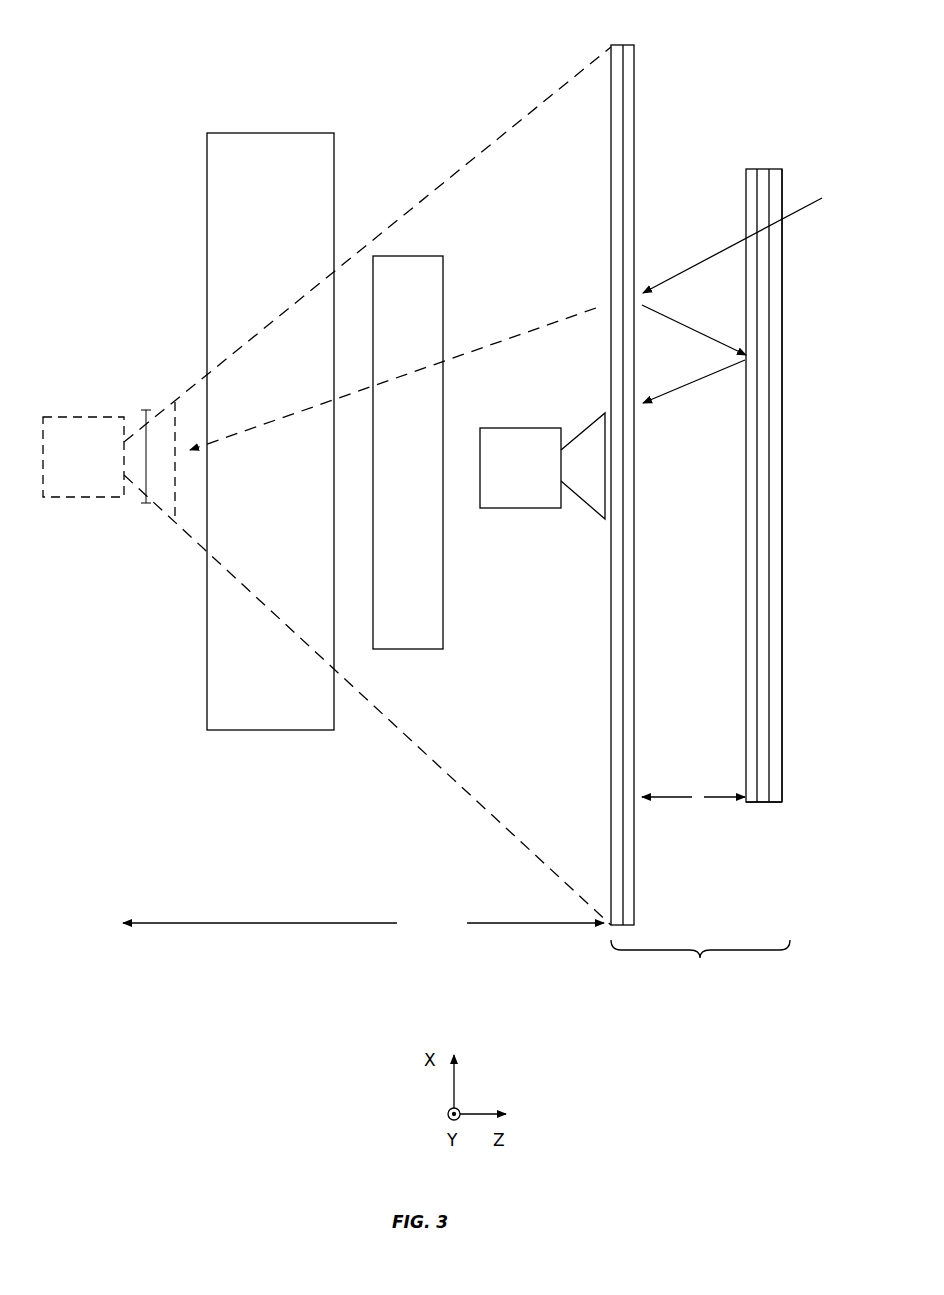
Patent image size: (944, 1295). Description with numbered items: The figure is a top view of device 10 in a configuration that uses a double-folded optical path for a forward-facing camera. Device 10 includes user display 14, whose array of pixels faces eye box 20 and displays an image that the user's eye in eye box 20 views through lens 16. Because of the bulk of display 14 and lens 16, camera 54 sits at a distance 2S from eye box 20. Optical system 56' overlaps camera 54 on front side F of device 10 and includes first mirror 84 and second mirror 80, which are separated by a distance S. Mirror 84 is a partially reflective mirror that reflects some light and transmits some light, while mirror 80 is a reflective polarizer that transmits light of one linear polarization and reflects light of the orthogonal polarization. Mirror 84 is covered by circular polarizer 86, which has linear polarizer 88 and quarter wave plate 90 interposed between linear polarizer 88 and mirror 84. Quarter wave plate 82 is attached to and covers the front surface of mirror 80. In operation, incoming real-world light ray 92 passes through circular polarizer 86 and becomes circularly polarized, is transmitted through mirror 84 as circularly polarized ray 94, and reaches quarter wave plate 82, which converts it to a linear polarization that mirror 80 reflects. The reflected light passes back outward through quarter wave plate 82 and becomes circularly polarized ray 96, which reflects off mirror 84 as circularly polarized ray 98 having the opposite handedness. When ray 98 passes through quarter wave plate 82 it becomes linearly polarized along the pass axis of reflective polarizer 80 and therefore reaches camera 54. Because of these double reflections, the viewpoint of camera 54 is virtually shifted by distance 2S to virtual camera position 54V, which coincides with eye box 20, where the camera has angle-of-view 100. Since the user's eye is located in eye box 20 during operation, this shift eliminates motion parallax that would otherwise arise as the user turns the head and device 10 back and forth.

The device 10 is at (243, 77).
The user display 14 is at (407, 649).
The lens 16 is at (270, 730).
The eye box 20 is at (148, 503).
The camera 54 is at (520, 508).
The virtual camera position 54V is at (84, 416).
The optical system 56' is at (700, 963).
The second mirror 80 is at (611, 83).
The quarter wave plate 82 is at (634, 68).
The first mirror 84 is at (746, 169).
The circular polarizer 86 is at (769, 166).
The linear polarizer 88 is at (782, 802).
The quarter wave plate 90 is at (763, 802).
The incoming light ray 92 is at (798, 213).
The circularly polarized ray 94 is at (705, 260).
The circularly polarized ray 96 is at (688, 330).
The circularly polarized ray 98 is at (688, 388).
The angle-of-view 100 is at (514, 128).
The front side F is at (823, 168).
The distance S is at (693, 798).
The distance 2S is at (363, 924).